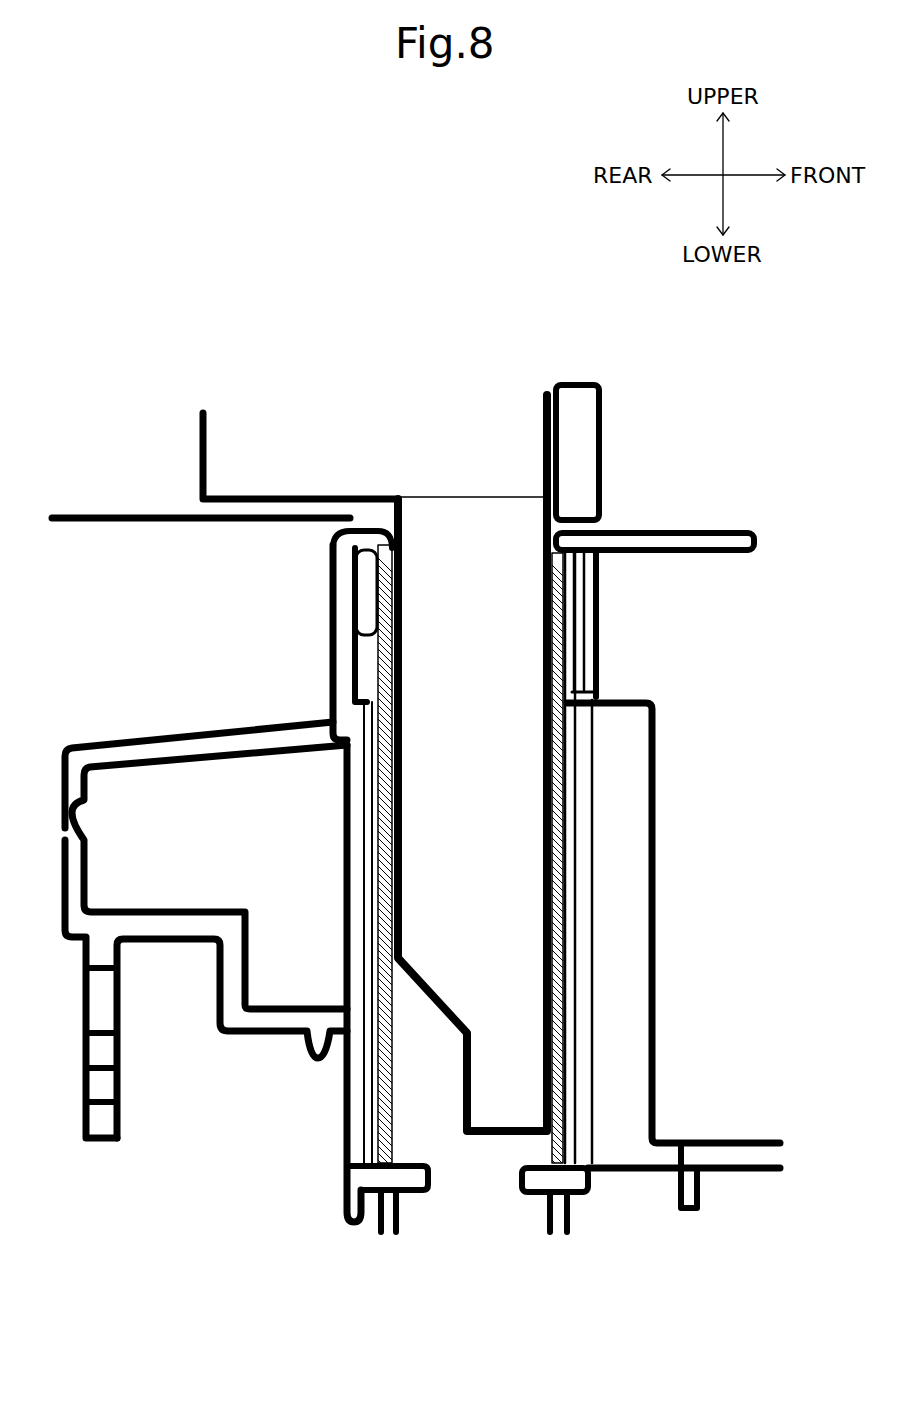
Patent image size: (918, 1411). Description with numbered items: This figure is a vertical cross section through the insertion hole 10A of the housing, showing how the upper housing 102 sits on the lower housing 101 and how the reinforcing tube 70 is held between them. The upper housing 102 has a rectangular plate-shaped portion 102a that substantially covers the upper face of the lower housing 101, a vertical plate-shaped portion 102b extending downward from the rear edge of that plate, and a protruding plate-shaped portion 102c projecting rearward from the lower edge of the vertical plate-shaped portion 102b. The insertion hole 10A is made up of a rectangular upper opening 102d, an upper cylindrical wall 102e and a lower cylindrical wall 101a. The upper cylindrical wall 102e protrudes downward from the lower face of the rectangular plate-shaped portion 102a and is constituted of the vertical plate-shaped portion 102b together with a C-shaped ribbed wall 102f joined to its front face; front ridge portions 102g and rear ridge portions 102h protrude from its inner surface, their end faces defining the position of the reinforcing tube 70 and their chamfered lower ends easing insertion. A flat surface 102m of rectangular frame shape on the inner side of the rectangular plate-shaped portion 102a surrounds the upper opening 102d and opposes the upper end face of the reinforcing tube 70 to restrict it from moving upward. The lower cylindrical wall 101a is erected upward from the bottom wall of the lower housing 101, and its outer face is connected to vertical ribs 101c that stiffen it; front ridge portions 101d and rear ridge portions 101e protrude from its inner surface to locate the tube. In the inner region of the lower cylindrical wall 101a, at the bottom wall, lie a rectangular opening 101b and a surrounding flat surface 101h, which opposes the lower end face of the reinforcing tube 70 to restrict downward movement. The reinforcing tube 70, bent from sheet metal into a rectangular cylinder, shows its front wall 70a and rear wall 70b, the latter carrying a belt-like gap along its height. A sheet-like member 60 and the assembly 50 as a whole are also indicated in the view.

The drum cartridge / body 50 is at (457, 390).
The flat surface 102m is at (333, 528).
The insertion hole 10A is at (613, 508).
The rectangular plate-shaped portion 102a is at (677, 527).
The upper housing 102 is at (700, 515).
The rear ridge portions 102h is at (335, 540).
The vertical plate-shaped portion 102b is at (330, 600).
The upper opening 102d is at (545, 541).
The upper cylindrical wall 102e is at (605, 593).
The C-shaped ribbed wall 102f is at (590, 640).
The front ridge portions 102g is at (583, 672).
The protruding plate-shaped portion 102c is at (172, 740).
The vertical ribs 101c is at (610, 815).
The lower cylindrical wall 101a is at (597, 880).
The front ridge portions 101d is at (568, 935).
The rear ridge portions 101e is at (360, 917).
The sheet member 60 is at (508, 963).
The reinforcing tube 70 is at (375, 1082).
The rear wall 70b is at (398, 1142).
The front wall 70a is at (545, 1138).
The opening 101b is at (523, 1172).
The flat surface 101h is at (572, 1207).
The lower housing 101 is at (727, 1163).